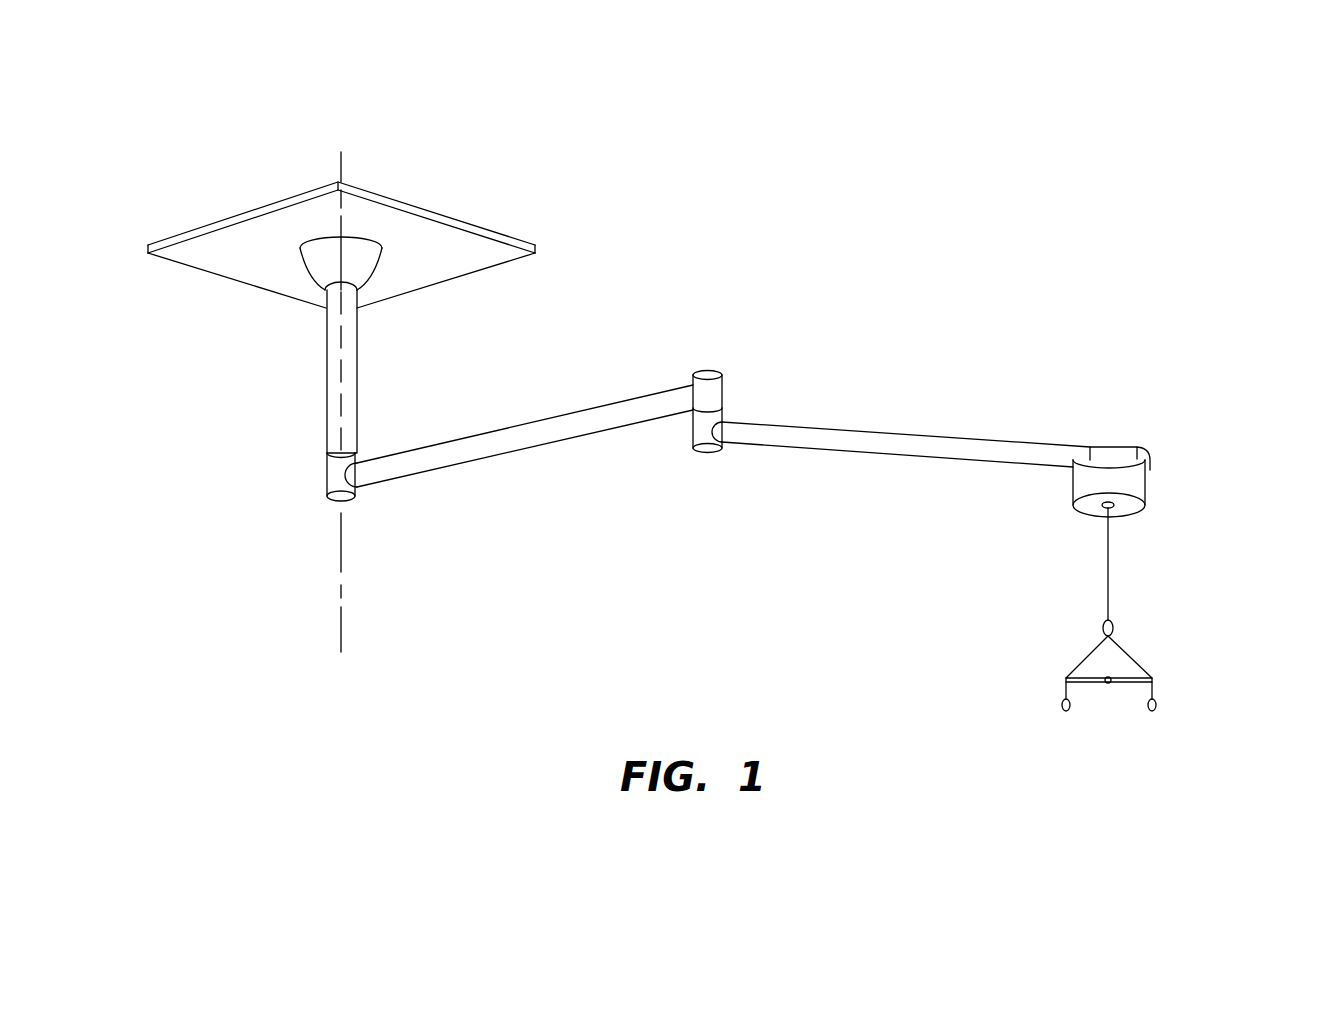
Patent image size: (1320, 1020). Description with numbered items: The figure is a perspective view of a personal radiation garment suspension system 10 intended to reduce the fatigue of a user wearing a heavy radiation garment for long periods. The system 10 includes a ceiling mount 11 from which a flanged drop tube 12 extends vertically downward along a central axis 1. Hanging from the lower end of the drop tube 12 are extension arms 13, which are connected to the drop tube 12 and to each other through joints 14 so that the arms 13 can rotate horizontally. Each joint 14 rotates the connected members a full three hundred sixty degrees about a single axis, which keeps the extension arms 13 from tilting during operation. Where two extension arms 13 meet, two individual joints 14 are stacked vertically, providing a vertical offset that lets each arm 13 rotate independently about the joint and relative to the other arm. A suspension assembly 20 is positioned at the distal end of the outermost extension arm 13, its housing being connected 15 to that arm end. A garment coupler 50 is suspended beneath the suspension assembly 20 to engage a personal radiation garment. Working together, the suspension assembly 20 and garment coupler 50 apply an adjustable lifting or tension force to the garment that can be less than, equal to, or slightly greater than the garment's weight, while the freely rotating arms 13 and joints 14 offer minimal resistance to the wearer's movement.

The axis 1 is at (341, 630).
The system 10 is at (197, 165).
The ceiling mount 11 is at (418, 213).
The flanged drop tube 12 is at (355, 360).
The extension arm 13 is at (488, 452).
The joint 14 is at (333, 480).
The connection 15 is at (1113, 452).
The suspension assembly 20 is at (1160, 488).
The garment coupler 50 is at (1078, 653).